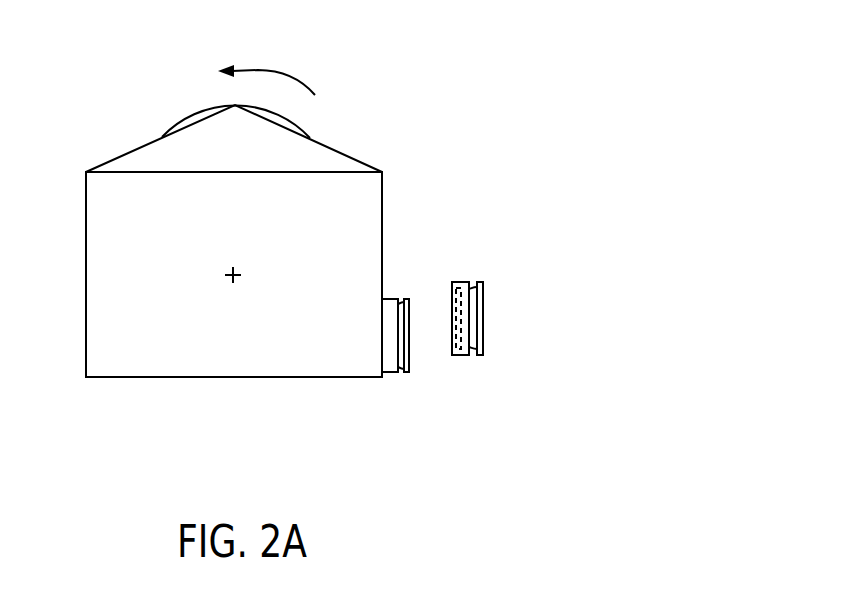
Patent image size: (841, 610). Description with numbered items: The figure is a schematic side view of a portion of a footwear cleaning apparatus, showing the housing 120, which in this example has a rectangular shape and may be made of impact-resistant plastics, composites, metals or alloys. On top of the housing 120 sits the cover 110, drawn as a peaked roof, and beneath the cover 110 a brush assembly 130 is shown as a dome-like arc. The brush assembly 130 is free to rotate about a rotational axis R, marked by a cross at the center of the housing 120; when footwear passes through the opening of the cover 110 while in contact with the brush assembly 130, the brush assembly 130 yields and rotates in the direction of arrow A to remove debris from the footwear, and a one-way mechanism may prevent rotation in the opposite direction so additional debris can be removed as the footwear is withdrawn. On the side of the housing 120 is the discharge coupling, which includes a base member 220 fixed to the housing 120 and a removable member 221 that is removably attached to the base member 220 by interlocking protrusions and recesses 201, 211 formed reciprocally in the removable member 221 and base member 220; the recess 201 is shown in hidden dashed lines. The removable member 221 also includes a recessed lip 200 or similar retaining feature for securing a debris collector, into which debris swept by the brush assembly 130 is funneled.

The cover 110 is at (325, 145).
The housing 120 is at (100, 262).
The brush assembly 130 is at (203, 108).
The arrow A is at (277, 70).
The rotational axis R is at (245, 273).
The base member 220 is at (384, 381).
The interlocking protrusions and recesses 211 is at (393, 372).
The removable member 221 is at (476, 304).
The recessed lip 200 is at (480, 355).
The interlocking protrusions and recesses 201 is at (462, 355).